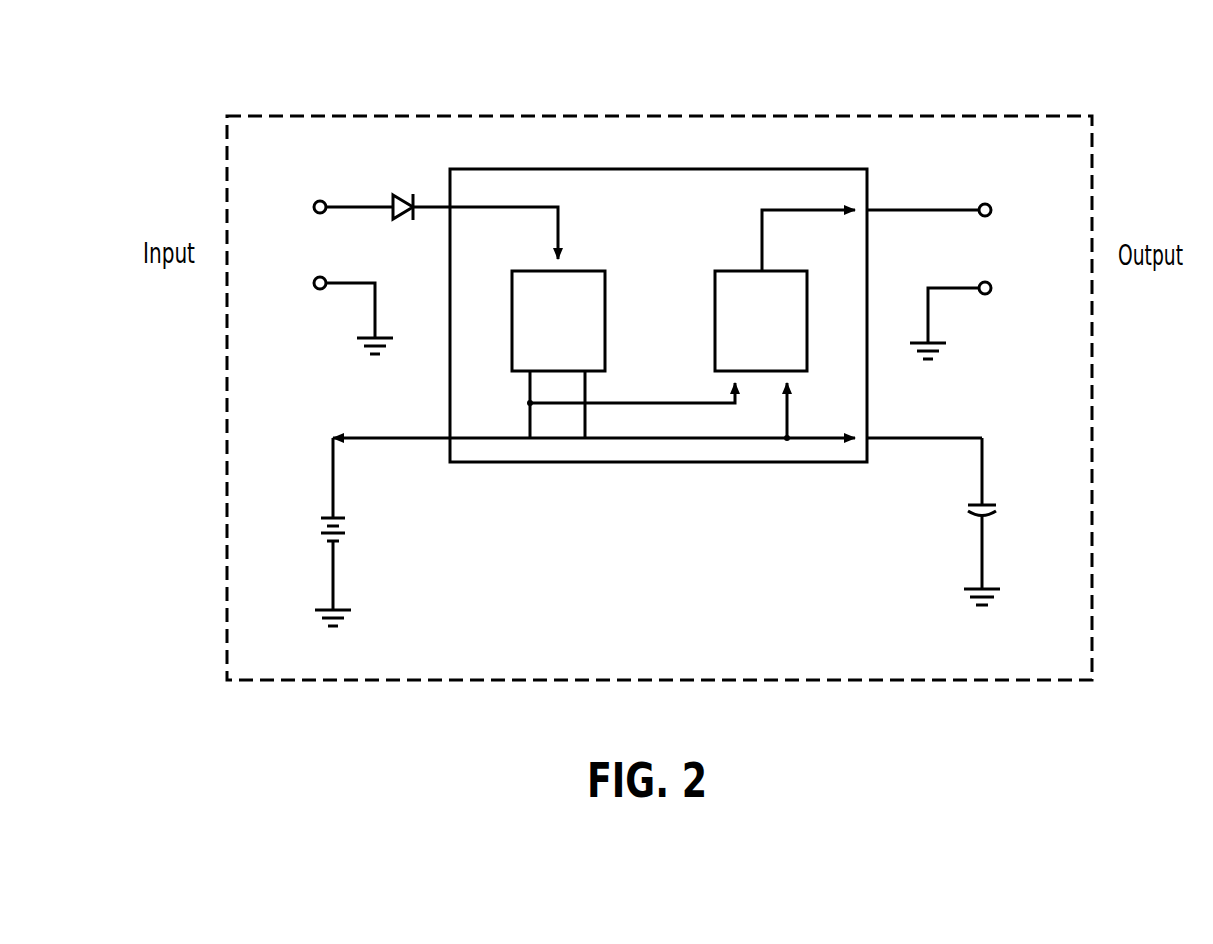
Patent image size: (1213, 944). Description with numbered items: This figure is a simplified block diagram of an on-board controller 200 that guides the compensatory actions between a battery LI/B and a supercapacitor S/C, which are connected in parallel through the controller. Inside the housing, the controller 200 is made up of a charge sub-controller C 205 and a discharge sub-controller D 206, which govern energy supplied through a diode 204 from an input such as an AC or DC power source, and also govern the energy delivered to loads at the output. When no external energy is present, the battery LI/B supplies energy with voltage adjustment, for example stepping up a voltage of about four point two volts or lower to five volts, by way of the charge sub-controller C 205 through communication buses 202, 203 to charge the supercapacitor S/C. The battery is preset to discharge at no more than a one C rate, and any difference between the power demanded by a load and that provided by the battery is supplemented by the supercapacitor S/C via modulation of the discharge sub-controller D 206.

The on-board controller 200 is at (1157, 70).
The communication bus 202 is at (386, 437).
The communication bus 203 is at (935, 437).
The diode 204 is at (398, 193).
The charge sub-controller 205 is at (590, 270).
The discharge sub-controller 206 is at (735, 270).